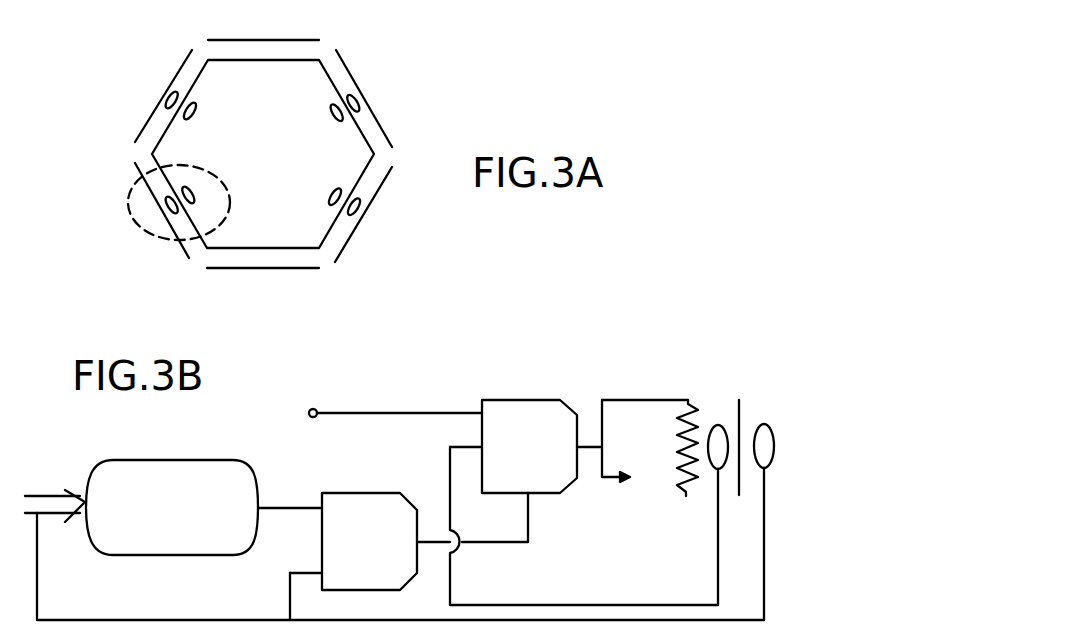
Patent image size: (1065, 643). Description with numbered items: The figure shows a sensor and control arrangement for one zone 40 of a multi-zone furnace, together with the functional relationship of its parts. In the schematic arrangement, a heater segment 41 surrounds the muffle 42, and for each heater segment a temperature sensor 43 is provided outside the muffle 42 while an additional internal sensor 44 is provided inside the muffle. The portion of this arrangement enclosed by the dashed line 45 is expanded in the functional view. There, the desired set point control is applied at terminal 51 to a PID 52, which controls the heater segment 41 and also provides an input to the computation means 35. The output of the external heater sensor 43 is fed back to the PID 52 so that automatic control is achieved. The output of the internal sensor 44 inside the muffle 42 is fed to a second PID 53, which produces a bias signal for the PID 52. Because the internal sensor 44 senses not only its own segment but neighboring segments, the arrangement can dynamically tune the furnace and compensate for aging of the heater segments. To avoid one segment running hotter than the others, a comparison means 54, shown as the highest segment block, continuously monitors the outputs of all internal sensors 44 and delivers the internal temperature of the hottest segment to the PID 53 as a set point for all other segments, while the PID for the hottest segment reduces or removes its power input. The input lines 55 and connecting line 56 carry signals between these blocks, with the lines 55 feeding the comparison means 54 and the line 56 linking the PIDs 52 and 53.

In FIG. 3A, the zone 40 is at (358, 63).
In FIG. 3A, the heater segment 41 is at (270, 38).
In FIG. 3B, the heater segment 41 is at (694, 398).
In FIG. 3A, the muffle 42 is at (320, 250).
In FIG. 3B, the muffle 42 is at (739, 418).
In FIG. 3A, the temperature sensor 43 is at (167, 98).
In FIG. 3B, the temperature sensor 43 is at (717, 425).
In FIG. 3A, the internal sensor 44 is at (190, 118).
In FIG. 3B, the internal sensor 44 is at (775, 434).
In FIG. 3A, the dashed line 45 is at (153, 238).
In FIG. 3B, the computation means 35 is at (636, 459).
In FIG. 3B, the terminal 51 is at (310, 410).
In FIG. 3B, the PID 52 is at (518, 400).
In FIG. 3B, the PID 53 is at (385, 493).
In FIG. 3B, the comparison means 54 is at (170, 458).
In FIG. 3B, the input signals 55 is at (50, 490).
In FIG. 3B, the feedback connection 56 is at (530, 517).